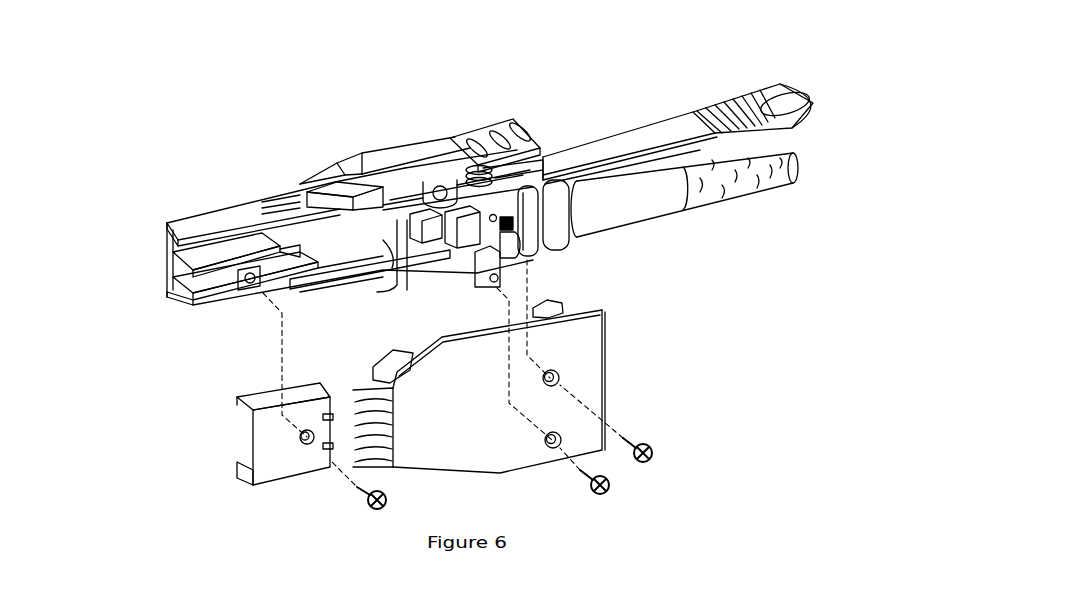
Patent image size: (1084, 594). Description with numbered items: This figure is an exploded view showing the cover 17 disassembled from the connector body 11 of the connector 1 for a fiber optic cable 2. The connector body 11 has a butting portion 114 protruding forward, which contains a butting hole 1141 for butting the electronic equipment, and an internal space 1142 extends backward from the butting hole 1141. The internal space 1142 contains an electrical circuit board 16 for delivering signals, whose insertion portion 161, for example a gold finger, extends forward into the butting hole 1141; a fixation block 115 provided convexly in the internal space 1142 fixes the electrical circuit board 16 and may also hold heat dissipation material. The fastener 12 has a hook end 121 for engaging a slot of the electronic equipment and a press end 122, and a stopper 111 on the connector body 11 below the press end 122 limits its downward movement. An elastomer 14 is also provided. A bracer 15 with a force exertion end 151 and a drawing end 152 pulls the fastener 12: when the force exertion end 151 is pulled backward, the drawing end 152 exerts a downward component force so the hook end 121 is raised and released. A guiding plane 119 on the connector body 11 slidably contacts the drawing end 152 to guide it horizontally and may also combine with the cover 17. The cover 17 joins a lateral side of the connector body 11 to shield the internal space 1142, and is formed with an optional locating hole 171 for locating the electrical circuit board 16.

The connector 1 is at (181, 99).
The connector body 11 is at (357, 160).
The stopper 111 is at (545, 152).
The butting portion 114 is at (195, 214).
The butting hole 1141 is at (165, 247).
The internal space 1142 is at (367, 285).
The fixation block 115 is at (392, 258).
The guiding plane 119 is at (557, 182).
The fastener 12 is at (440, 148).
The hook end 121 is at (298, 181).
The press end 122 is at (520, 130).
The elastomer 14 is at (470, 165).
The bracer 15 is at (617, 138).
The force exertion end 151 is at (735, 95).
The drawing end 152 is at (489, 133).
The electrical circuit board 16 is at (340, 280).
The insertion portion 161 is at (208, 300).
The cover 17 is at (587, 368).
The locating hole 171 is at (325, 408).
The fiber optic cable 2 is at (641, 203).